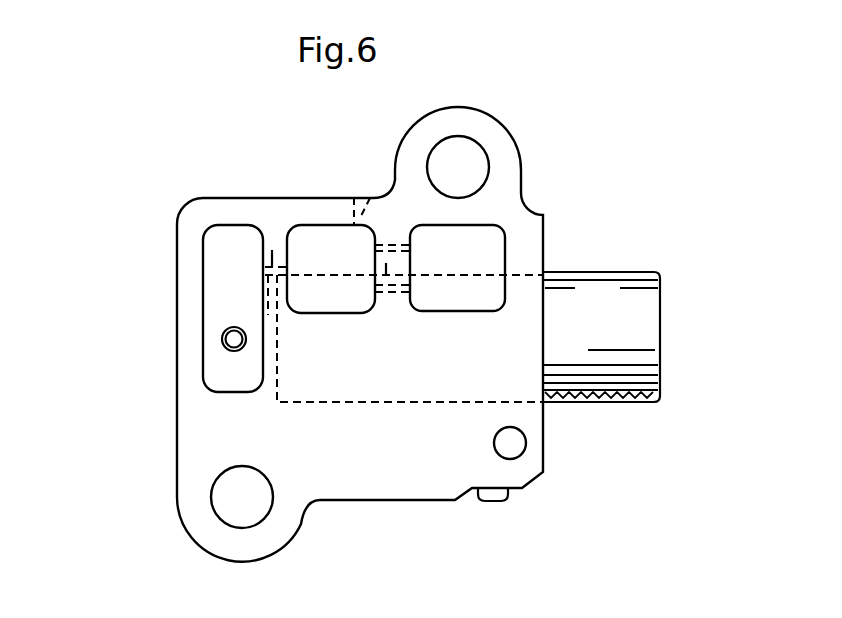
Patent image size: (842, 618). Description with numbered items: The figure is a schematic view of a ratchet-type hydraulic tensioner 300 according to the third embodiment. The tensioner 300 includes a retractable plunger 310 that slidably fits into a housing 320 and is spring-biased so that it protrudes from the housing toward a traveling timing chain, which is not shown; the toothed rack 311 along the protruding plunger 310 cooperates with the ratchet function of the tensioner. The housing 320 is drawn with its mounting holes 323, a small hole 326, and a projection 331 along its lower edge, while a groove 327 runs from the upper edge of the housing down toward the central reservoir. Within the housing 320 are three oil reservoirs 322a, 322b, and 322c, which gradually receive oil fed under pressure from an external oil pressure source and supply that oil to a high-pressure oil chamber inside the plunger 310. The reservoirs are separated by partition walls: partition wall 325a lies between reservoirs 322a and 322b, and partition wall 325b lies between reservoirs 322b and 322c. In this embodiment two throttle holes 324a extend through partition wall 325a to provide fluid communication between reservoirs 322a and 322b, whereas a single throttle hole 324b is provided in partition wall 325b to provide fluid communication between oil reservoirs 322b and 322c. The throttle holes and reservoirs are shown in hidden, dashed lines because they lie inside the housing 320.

The tensioner 300 is at (166, 251).
The retractable plunger 310 is at (637, 272).
The rack teeth 311 is at (585, 400).
The housing 320 is at (200, 433).
The oil reservoir 322a is at (505, 248).
The oil reservoir 322b is at (323, 225).
The oil reservoir 322c is at (220, 225).
The mounting hole 323 is at (472, 145).
The throttle holes 324a is at (387, 247).
The throttle hole 324b is at (268, 315).
The partition wall 325a is at (386, 263).
The partition wall 325b is at (273, 250).
The oil hole 326 is at (222, 339).
The groove 327 is at (370, 198).
The projection 331 is at (505, 501).